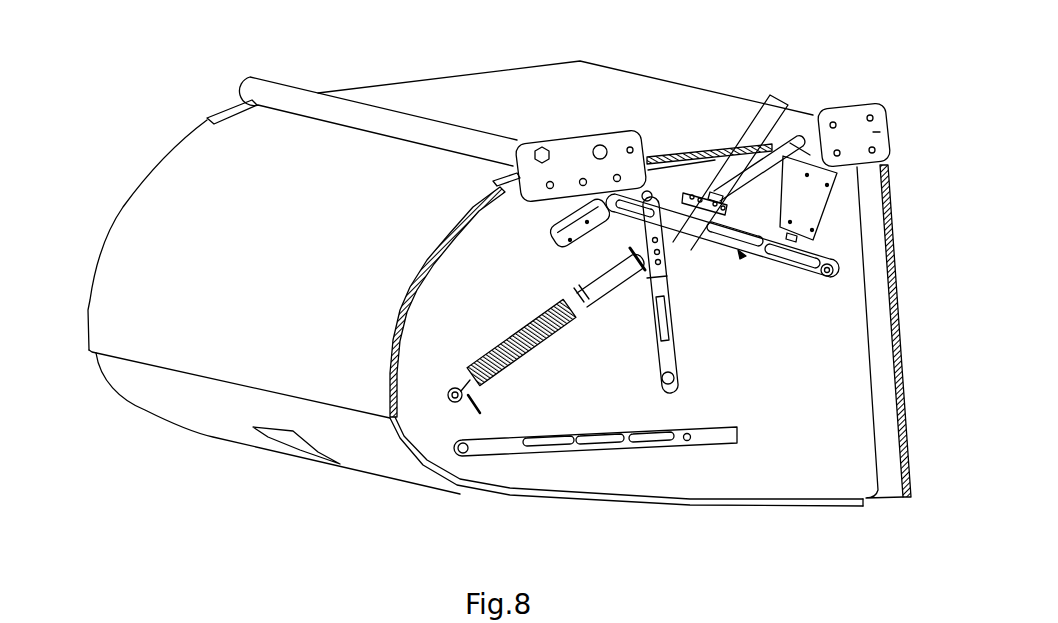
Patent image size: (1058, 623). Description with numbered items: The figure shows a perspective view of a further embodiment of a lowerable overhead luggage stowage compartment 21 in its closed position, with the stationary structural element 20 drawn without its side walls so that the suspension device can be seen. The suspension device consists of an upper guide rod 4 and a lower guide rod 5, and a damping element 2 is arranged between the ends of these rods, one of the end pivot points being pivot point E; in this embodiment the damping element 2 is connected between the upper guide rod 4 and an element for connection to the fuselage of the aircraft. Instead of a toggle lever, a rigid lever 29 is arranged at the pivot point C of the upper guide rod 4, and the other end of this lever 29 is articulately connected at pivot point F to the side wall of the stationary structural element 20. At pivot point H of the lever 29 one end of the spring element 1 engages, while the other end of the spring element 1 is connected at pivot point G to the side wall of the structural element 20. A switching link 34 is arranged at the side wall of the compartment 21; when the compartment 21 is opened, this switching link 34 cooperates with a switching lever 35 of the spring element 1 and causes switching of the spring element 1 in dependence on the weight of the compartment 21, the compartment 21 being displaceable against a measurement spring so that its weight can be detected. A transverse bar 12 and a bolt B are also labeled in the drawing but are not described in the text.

The transverse bar 12 is at (457, 132).
The stationary structural element 20 is at (125, 218).
The overhead luggage stowage compartment 21 is at (820, 460).
The damping element 2 is at (823, 152).
The upper guide rod 4 is at (823, 257).
The pivot point C is at (770, 95).
The pivot point H is at (797, 136).
The bolt B is at (837, 277).
The rigid lever 29 is at (753, 260).
The pivot point F is at (673, 380).
The switching link 34 is at (577, 247).
The spring element 1 is at (515, 375).
The switching lever 35 is at (477, 412).
The pivot point G is at (457, 398).
The lower guide rod 5 is at (708, 438).
The pivot point E is at (690, 445).